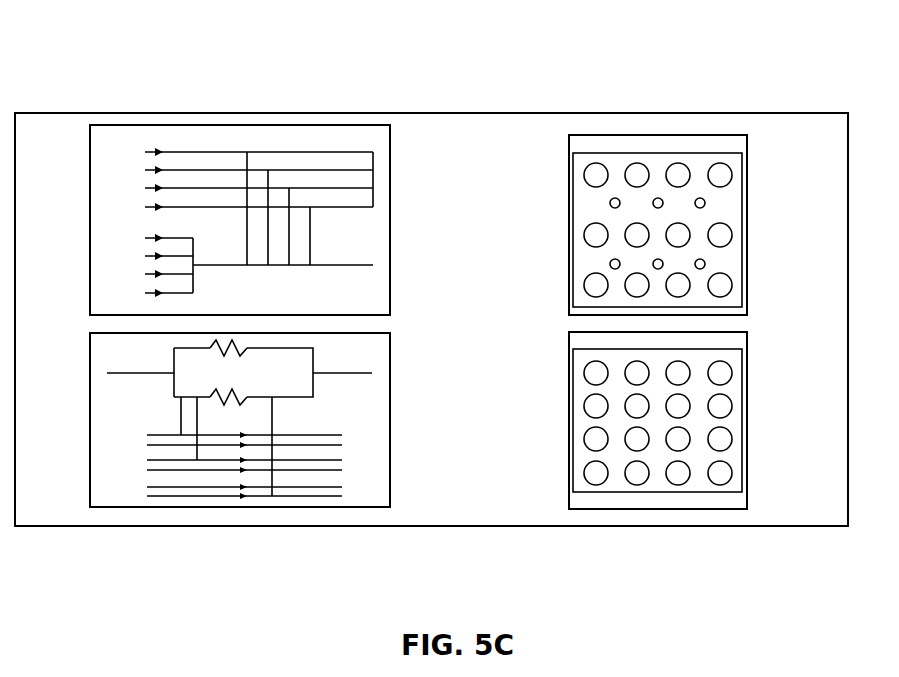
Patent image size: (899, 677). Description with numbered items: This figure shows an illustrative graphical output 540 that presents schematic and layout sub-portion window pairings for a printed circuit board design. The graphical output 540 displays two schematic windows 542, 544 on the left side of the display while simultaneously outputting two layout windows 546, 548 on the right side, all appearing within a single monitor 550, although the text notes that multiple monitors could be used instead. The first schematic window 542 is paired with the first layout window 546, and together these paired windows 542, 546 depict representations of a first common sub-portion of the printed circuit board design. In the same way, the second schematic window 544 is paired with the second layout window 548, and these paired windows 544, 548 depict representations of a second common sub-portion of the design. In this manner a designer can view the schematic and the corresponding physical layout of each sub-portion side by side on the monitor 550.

The graphical output 540 is at (43, 84).
The first schematic window 542 is at (245, 126).
The second schematic window 544 is at (245, 507).
The first layout window 546 is at (640, 136).
The second layout window 548 is at (696, 510).
The monitor 550 is at (740, 113).